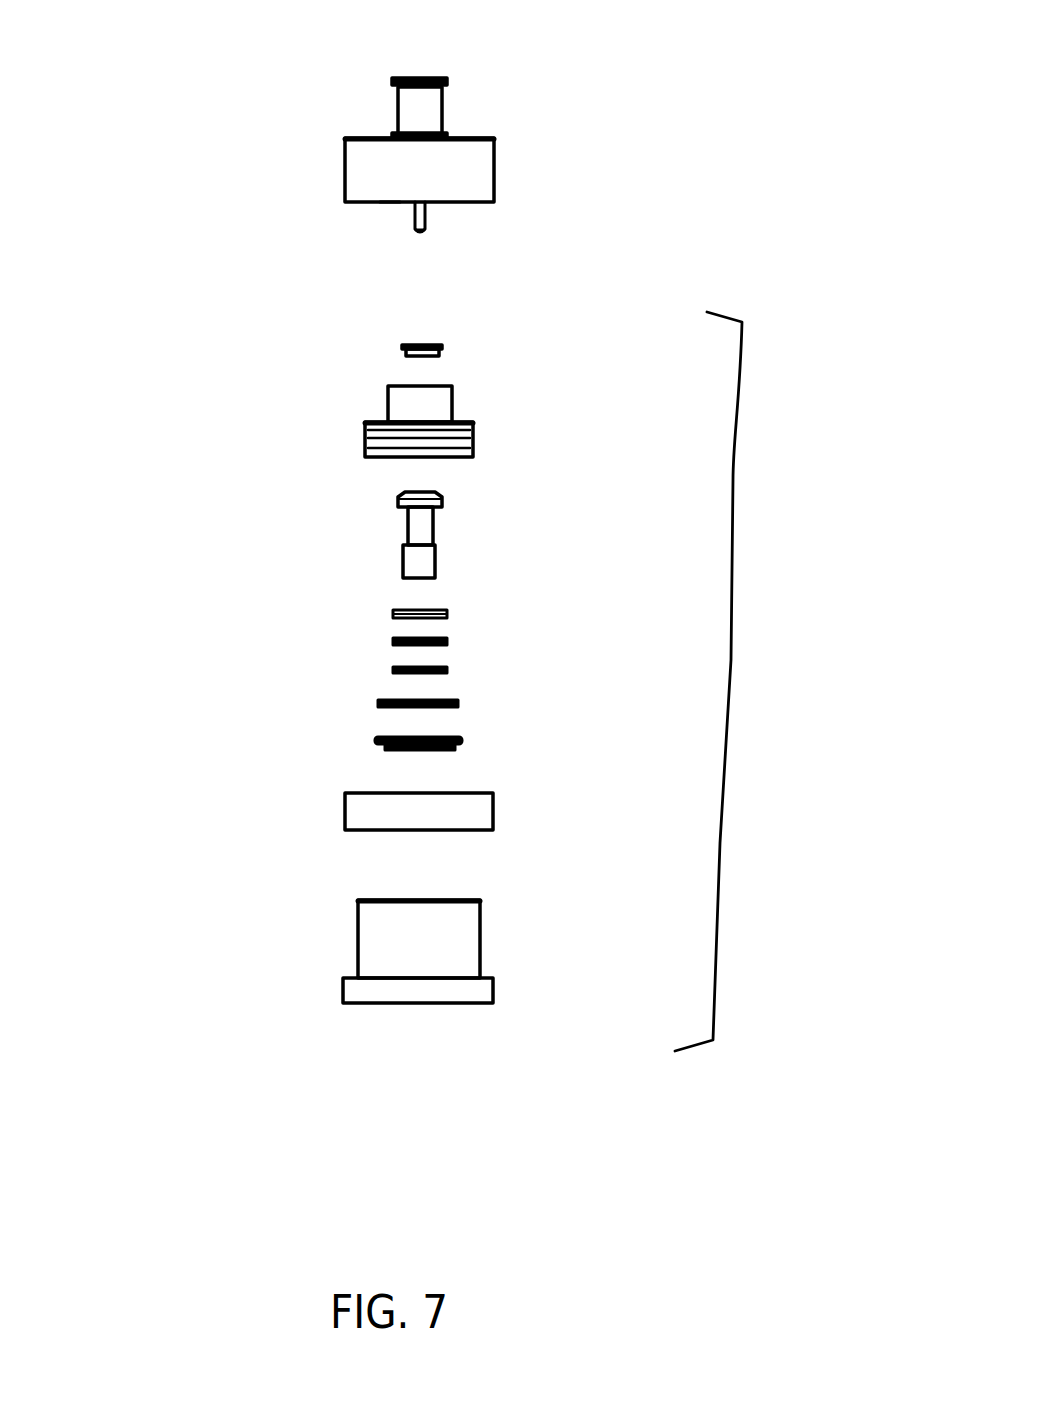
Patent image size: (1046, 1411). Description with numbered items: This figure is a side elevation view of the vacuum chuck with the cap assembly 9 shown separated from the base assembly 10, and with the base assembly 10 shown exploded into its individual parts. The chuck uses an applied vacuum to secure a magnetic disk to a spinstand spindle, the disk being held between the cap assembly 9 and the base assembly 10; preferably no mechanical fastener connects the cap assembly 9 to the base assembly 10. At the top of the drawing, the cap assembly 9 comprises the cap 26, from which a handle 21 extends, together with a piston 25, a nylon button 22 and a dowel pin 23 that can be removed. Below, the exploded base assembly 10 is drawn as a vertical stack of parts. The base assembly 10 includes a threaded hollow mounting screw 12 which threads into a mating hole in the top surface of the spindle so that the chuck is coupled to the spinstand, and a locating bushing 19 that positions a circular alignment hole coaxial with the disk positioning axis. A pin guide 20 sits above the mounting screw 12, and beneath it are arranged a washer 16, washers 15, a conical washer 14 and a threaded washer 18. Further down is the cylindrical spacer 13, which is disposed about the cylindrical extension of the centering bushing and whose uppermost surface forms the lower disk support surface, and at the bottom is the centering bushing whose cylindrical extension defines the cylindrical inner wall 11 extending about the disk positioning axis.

The cap assembly 9 is at (563, 152).
The base assembly 10 is at (731, 655).
The cylindrical inner wall 11 is at (423, 1023).
The threaded hollow mounting screw 12 is at (382, 579).
The cylindrical spacer 13 is at (499, 850).
The conical washer 14 is at (456, 719).
The washer 15 is at (464, 654).
The washer 16 is at (434, 591).
The threaded washer 18 is at (381, 760).
The locating bushing 19 is at (398, 333).
The pin guide 20 is at (370, 445).
The handle 21 is at (440, 74).
The nylon button 22 is at (421, 233).
The dowel pin 23 is at (426, 218).
The piston 25 is at (396, 204).
The cap 26 is at (494, 186).